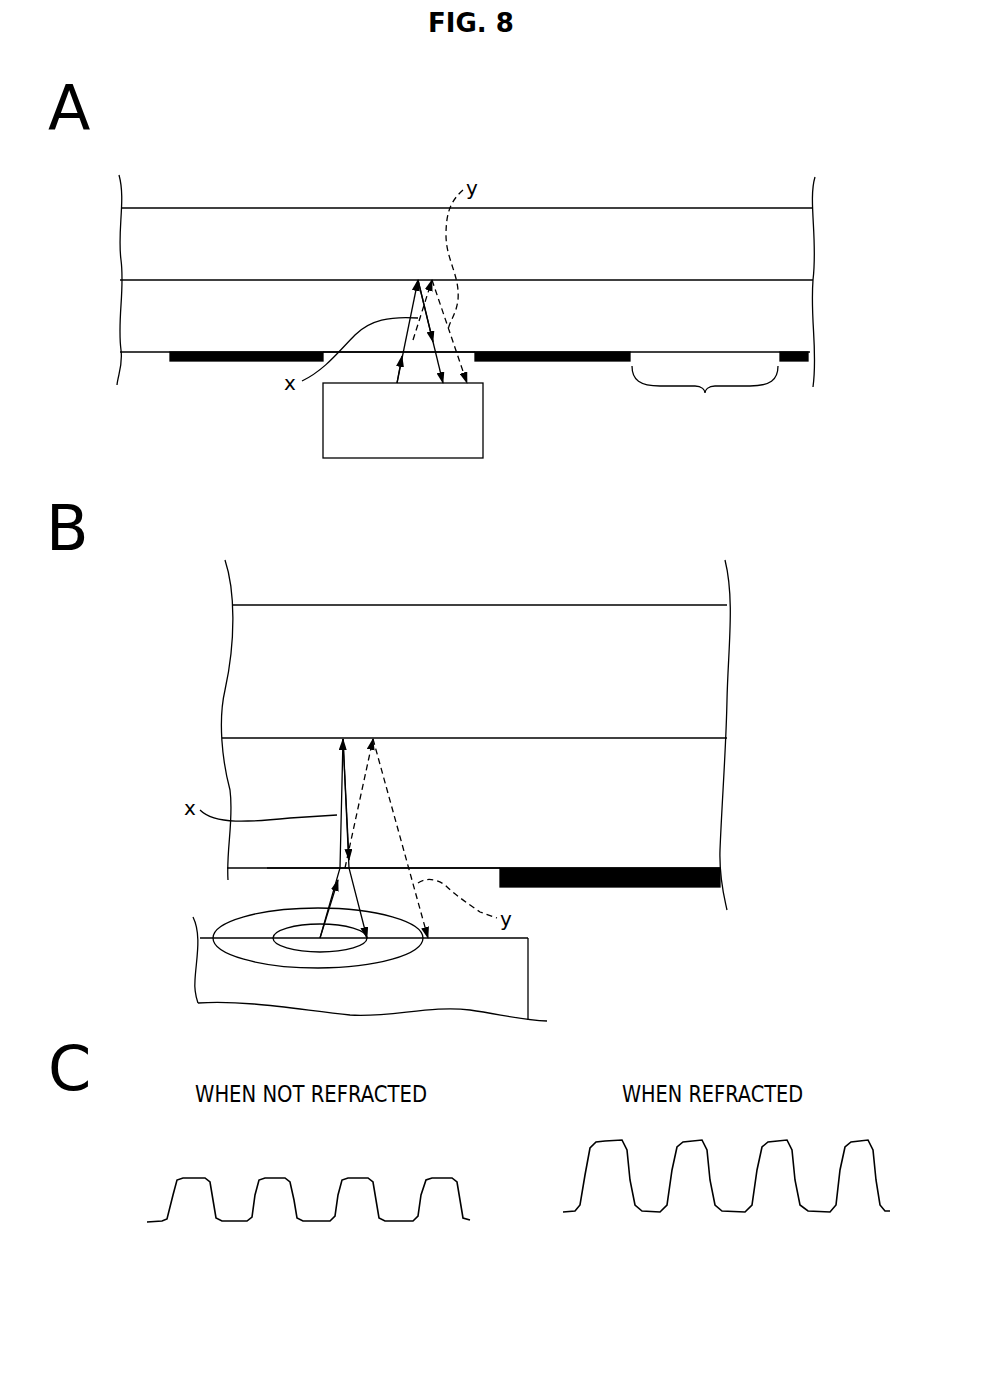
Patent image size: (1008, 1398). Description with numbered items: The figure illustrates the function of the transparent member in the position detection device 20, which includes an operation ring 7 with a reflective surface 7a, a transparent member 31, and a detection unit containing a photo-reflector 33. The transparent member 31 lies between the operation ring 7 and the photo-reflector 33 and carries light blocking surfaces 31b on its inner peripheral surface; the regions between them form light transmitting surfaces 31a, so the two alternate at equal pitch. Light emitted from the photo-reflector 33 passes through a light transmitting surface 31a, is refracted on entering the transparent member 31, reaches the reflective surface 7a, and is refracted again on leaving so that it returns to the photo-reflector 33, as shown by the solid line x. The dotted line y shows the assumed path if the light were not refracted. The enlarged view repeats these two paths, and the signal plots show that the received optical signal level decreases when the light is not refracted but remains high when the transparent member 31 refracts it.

The position detection device 20 is at (190, 181).
The operation ring 7 is at (598, 228).
The reflective surface 7a is at (153, 282).
The transparent member 31 is at (162, 342).
The light transmitting surfaces 31a is at (145, 905).
The light blocking surfaces 31b is at (557, 362).
The photo-reflector 33 is at (465, 433).